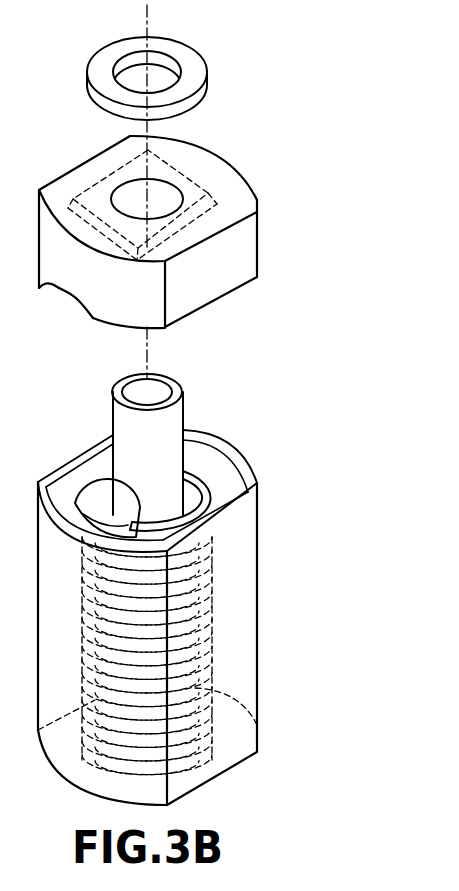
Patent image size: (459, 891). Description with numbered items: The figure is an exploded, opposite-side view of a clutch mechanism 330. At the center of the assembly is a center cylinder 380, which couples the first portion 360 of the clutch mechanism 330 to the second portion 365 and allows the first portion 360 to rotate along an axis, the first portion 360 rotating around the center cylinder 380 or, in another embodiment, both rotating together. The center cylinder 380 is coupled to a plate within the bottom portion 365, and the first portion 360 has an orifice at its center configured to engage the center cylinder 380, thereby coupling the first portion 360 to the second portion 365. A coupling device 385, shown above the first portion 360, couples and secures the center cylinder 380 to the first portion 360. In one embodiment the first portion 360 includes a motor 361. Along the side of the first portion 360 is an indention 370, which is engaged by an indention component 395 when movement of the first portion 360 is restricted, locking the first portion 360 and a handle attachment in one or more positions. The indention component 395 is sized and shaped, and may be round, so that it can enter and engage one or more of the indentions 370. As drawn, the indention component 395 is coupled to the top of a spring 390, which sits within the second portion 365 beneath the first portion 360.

The clutch mechanism 330 is at (324, 135).
The coupling device 385 is at (207, 76).
The first portion 360 is at (258, 232).
The motor 361 is at (212, 182).
The indention 370 is at (73, 295).
The center cylinder 380 is at (183, 408).
The second portion 365 is at (257, 612).
The spring 390 is at (212, 667).
The indention component 395 is at (102, 503).